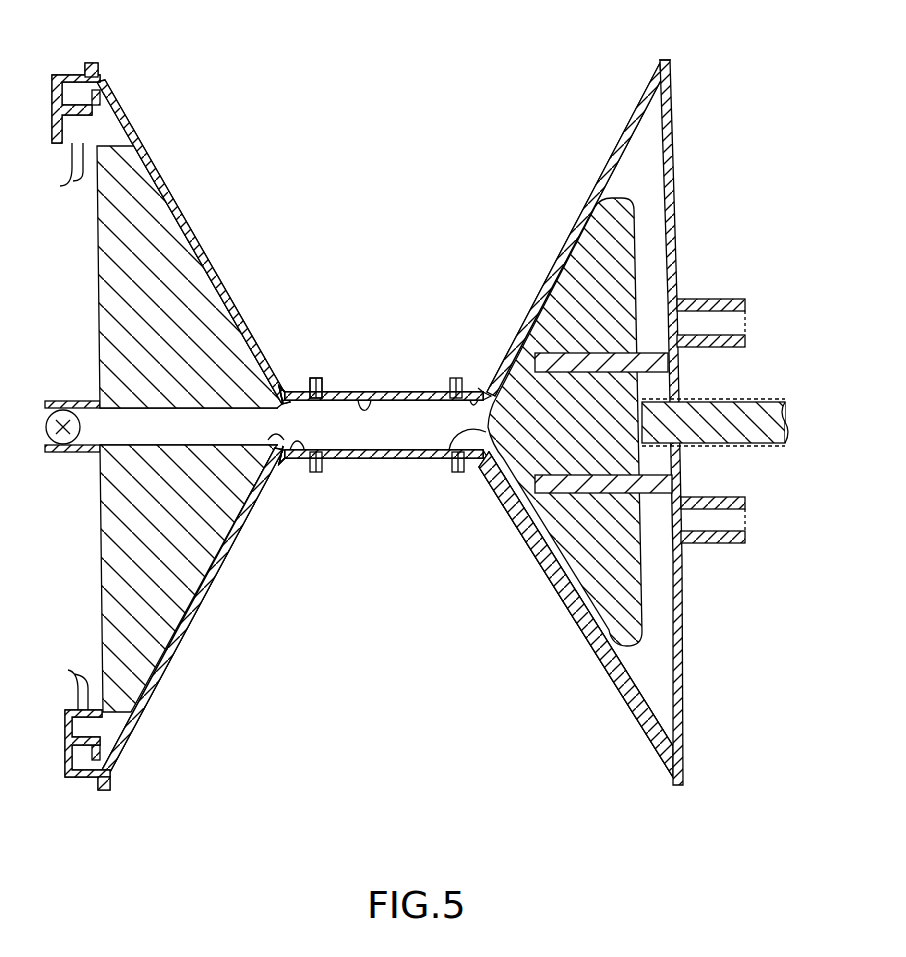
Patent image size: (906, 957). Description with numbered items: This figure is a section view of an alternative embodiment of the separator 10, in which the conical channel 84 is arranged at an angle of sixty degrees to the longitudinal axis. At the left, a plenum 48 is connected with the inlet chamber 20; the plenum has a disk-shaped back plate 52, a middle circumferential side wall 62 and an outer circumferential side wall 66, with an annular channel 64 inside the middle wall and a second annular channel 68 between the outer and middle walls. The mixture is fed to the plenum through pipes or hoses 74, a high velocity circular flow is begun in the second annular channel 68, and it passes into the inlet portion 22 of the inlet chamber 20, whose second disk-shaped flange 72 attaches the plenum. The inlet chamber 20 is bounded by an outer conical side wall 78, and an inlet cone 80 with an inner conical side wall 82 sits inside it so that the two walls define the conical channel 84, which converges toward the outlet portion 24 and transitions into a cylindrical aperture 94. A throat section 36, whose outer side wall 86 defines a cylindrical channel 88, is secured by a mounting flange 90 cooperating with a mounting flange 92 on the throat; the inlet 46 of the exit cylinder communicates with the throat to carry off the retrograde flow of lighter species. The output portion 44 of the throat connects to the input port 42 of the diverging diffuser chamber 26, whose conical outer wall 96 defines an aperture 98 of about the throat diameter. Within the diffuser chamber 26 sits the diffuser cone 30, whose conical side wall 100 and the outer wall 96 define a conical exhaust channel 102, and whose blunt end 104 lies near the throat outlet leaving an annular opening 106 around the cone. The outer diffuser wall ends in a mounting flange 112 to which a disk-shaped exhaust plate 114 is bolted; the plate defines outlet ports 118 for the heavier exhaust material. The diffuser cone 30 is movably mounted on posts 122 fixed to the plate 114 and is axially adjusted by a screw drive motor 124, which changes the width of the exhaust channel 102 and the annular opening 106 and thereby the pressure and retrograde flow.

The separator 10 is at (376, 297).
The inlet chamber 20 is at (153, 152).
The inlet portion 22 is at (110, 74).
The outlet portion 24 is at (279, 340).
The diffuser chamber 26 is at (570, 216).
The diffuser cone 30 is at (622, 206).
The throat section 36 is at (405, 460).
The input port 42 is at (492, 378).
The output portion 44 is at (470, 476).
The inlet of the exit cylinder 46 is at (300, 452).
The plenum 48 is at (62, 72).
The back plate 52 is at (58, 115).
The middle circumferential side wall 62 is at (100, 96).
The annular channel 64 is at (70, 722).
The outer circumferential side wall 66 is at (90, 64).
The second annular channel 68 is at (66, 760).
The second disk-shaped flange 72 is at (108, 786).
The pipes or hoses 74 is at (79, 675).
The outer conical side wall 78 is at (200, 243).
The inlet cone 80 is at (190, 287).
The inner conical side wall 82 is at (238, 522).
The conical channel 84 is at (163, 663).
The outer side wall 86 is at (370, 390).
The cylindrical channel 88 is at (344, 458).
The mounting flange 90 is at (310, 384).
The mounting flange 92 is at (324, 384).
The cylindrical aperture 94 is at (318, 472).
The conical outer wall 96 is at (558, 580).
The aperture 98 is at (462, 385).
The conical side wall 100 is at (535, 300).
The conical exhaust channel 102 is at (584, 612).
The blunt end 104 is at (449, 458).
The annular opening 106 is at (505, 488).
The mounting flange 112 is at (660, 63).
The exhaust plate 114 is at (671, 84).
The outlet ports 118 is at (716, 306).
The posts 122 is at (655, 362).
The screw drive motor 124 is at (770, 430).